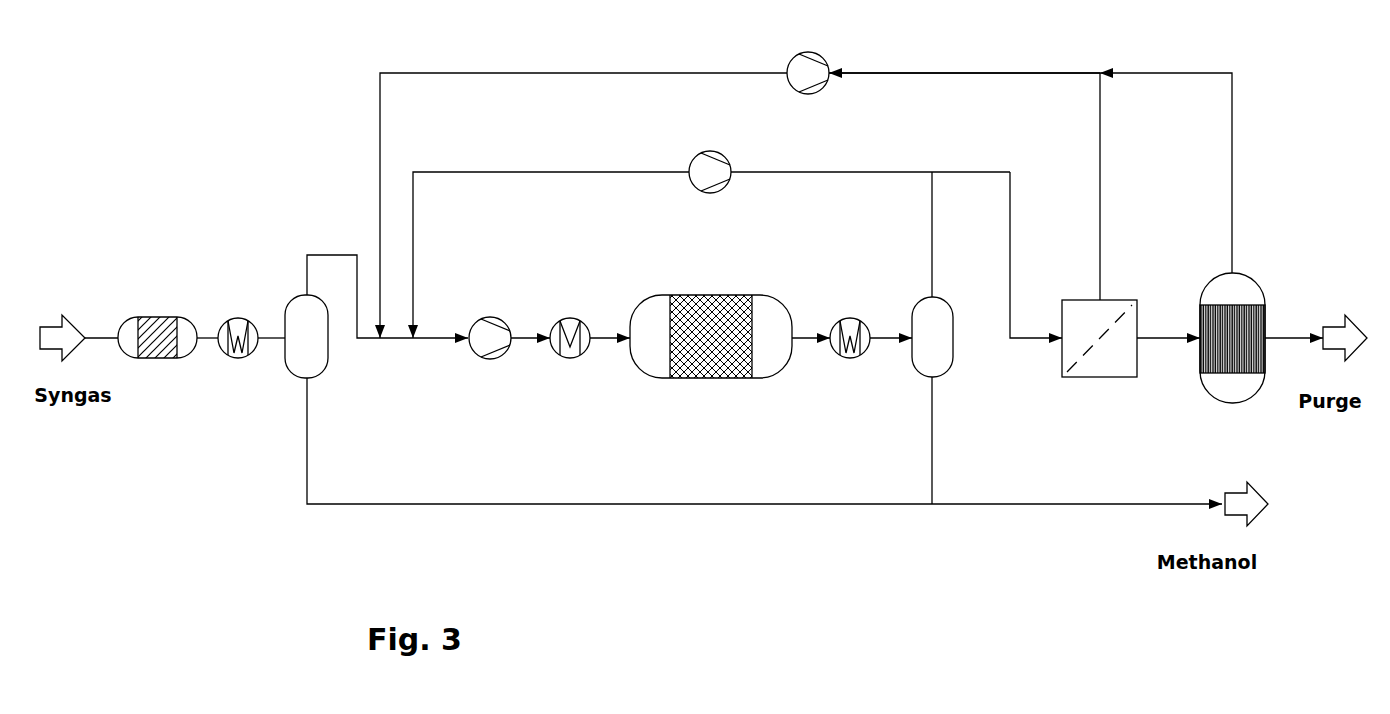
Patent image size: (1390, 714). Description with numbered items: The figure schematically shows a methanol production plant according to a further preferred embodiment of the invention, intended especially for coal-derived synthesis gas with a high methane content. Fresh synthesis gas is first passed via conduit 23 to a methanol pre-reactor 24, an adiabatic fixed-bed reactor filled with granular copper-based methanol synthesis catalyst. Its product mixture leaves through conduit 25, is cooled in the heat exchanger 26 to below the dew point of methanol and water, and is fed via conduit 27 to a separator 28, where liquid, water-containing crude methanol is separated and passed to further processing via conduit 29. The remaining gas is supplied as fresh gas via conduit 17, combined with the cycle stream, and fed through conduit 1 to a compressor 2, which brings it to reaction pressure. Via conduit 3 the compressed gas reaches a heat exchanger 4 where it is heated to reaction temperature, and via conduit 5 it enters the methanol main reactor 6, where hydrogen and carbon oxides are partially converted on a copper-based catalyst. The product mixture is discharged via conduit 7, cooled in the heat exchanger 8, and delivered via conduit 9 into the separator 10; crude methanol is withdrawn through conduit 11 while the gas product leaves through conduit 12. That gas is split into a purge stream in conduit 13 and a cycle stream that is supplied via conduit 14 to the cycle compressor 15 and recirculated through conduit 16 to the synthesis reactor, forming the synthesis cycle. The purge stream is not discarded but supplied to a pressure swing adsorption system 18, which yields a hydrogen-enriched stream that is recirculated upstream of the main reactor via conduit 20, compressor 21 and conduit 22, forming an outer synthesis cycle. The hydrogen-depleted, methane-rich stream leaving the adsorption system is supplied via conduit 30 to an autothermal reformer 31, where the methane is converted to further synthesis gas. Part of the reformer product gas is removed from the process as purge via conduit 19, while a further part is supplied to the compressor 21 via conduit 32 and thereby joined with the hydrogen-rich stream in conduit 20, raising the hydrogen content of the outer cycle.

The conduit 1 is at (434, 319).
The compressor 2 is at (490, 356).
The conduit 3 is at (530, 319).
The heat exchanger 4 is at (570, 356).
The conduit 5 is at (610, 319).
The methanol main reactor 6 is at (711, 354).
The conduit 7 is at (811, 322).
The heat exchanger 8 is at (850, 356).
The conduit 9 is at (891, 322).
The separator 10 is at (948, 346).
The conduit 11 is at (913, 440).
The conduit 12 is at (914, 234).
The conduit 13 is at (1010, 236).
The conduit 14 is at (870, 153).
The cycle compressor 15 is at (710, 187).
The conduit 16 is at (551, 236).
The conduit 17 is at (358, 312).
The pressure swing adsorption system 18 is at (1099, 356).
The conduit 19 is at (1294, 320).
The conduit 20 is at (1119, 186).
The compressor 21 is at (800, 86).
The conduit 22 is at (740, 184).
The conduit 23 is at (101, 320).
The methanol pre-reactor 24 is at (157, 355).
The conduit 25 is at (208, 320).
The heat exchanger 26 is at (238, 355).
The conduit 27 is at (271, 320).
The separator 28 is at (319, 344).
The conduit 29 is at (748, 441).
The conduit 30 is at (1168, 320).
The autothermal reformer 31 is at (1232, 353).
The conduit 32 is at (1194, 173).